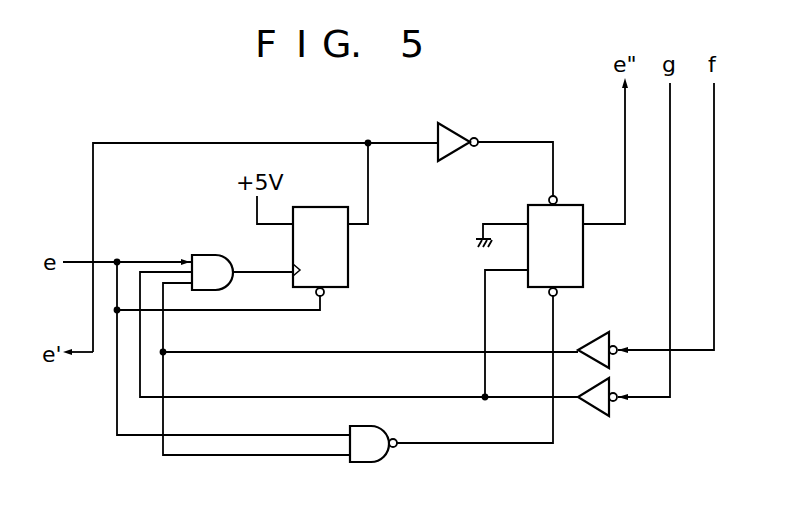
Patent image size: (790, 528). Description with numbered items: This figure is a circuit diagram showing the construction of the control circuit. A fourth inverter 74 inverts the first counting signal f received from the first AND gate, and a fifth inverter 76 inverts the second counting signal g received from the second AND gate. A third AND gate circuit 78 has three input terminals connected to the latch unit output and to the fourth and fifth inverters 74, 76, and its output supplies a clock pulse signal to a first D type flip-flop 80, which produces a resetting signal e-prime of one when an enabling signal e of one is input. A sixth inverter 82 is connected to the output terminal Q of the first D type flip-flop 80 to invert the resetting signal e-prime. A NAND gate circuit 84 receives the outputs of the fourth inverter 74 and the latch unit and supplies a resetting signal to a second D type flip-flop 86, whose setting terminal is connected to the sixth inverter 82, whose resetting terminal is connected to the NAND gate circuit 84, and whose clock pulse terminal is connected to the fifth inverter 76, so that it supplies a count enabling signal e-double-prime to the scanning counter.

The fourth inverter 74 is at (594, 343).
The fifth inverter 76 is at (588, 407).
The third AND gate circuit 78 is at (212, 266).
The first D type flip-flop 80 is at (344, 262).
The sixth inverter 82 is at (452, 139).
The NAND gate circuit 84 is at (371, 449).
The second D type flip-flop 86 is at (578, 262).